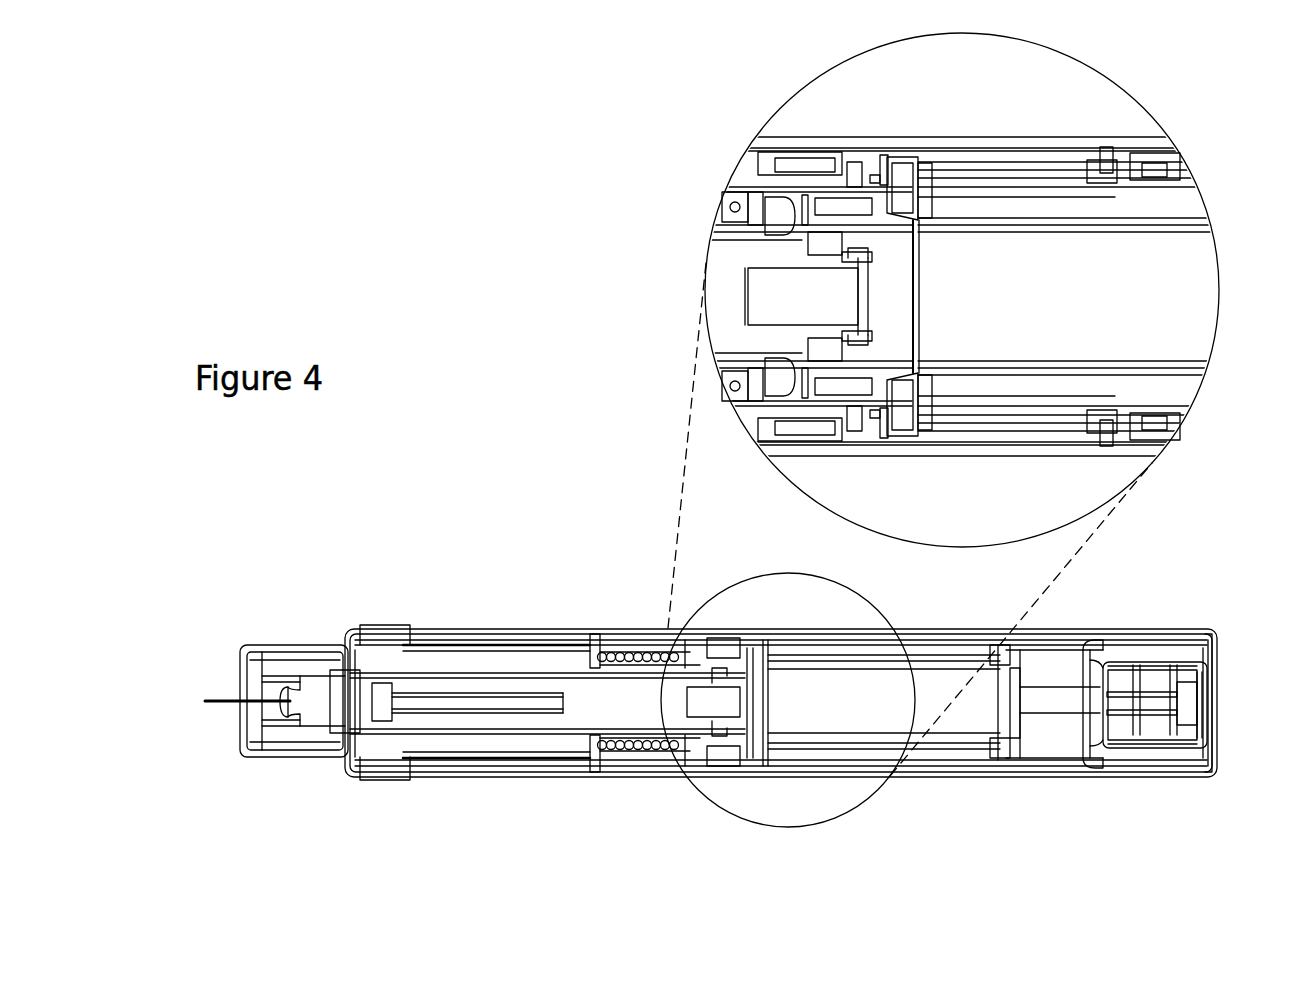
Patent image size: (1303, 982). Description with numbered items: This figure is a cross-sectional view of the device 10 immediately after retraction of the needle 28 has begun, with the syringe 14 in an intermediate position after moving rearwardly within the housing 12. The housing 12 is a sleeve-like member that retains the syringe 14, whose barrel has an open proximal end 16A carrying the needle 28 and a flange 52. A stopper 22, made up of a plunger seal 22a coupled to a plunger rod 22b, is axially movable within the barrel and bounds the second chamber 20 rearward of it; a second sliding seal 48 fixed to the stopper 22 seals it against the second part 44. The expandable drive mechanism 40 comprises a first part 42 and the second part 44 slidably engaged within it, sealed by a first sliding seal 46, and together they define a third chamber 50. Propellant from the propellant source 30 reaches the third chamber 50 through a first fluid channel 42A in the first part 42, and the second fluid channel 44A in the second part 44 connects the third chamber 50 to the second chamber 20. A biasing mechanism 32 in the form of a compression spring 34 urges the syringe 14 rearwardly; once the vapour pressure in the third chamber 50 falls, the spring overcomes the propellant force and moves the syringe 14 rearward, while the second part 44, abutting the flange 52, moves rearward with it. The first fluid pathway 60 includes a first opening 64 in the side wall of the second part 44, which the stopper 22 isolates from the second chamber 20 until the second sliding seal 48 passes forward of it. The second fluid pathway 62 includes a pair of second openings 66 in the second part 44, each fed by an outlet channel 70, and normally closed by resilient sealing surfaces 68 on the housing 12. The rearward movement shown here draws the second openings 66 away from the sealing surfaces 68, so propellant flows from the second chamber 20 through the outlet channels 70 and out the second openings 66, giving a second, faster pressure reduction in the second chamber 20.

The device 10 is at (438, 528).
The housing 12 is at (541, 655).
The syringe 14 is at (395, 742).
The open proximal end 16A is at (322, 748).
The second chamber 20 is at (1168, 290).
The stopper 22 is at (478, 730).
The plunger seal 22a is at (372, 668).
The plunger rod 22b is at (462, 668).
The needle 28 is at (225, 700).
The propellant source 30 is at (1213, 677).
The biasing mechanism 32 is at (608, 742).
The compression spring 34 is at (645, 742).
The expandable drive mechanism 40 is at (1080, 645).
The first part 42 is at (1118, 660).
The first fluid channel 42A is at (1100, 713).
The second part 44 is at (833, 735).
The second fluid channel 44A is at (1022, 703).
The first sliding seal 46 is at (978, 742).
The second sliding seal 48 is at (705, 742).
The third chamber 50 is at (1042, 677).
The flange 52 is at (727, 660).
The first fluid pathway 60 is at (905, 283).
The second fluid pathway 62 is at (903, 193).
The first opening 64 is at (880, 300).
The second openings 66 is at (885, 157).
The sealing surfaces 68 is at (848, 162).
The outlet channels 70 is at (918, 225).